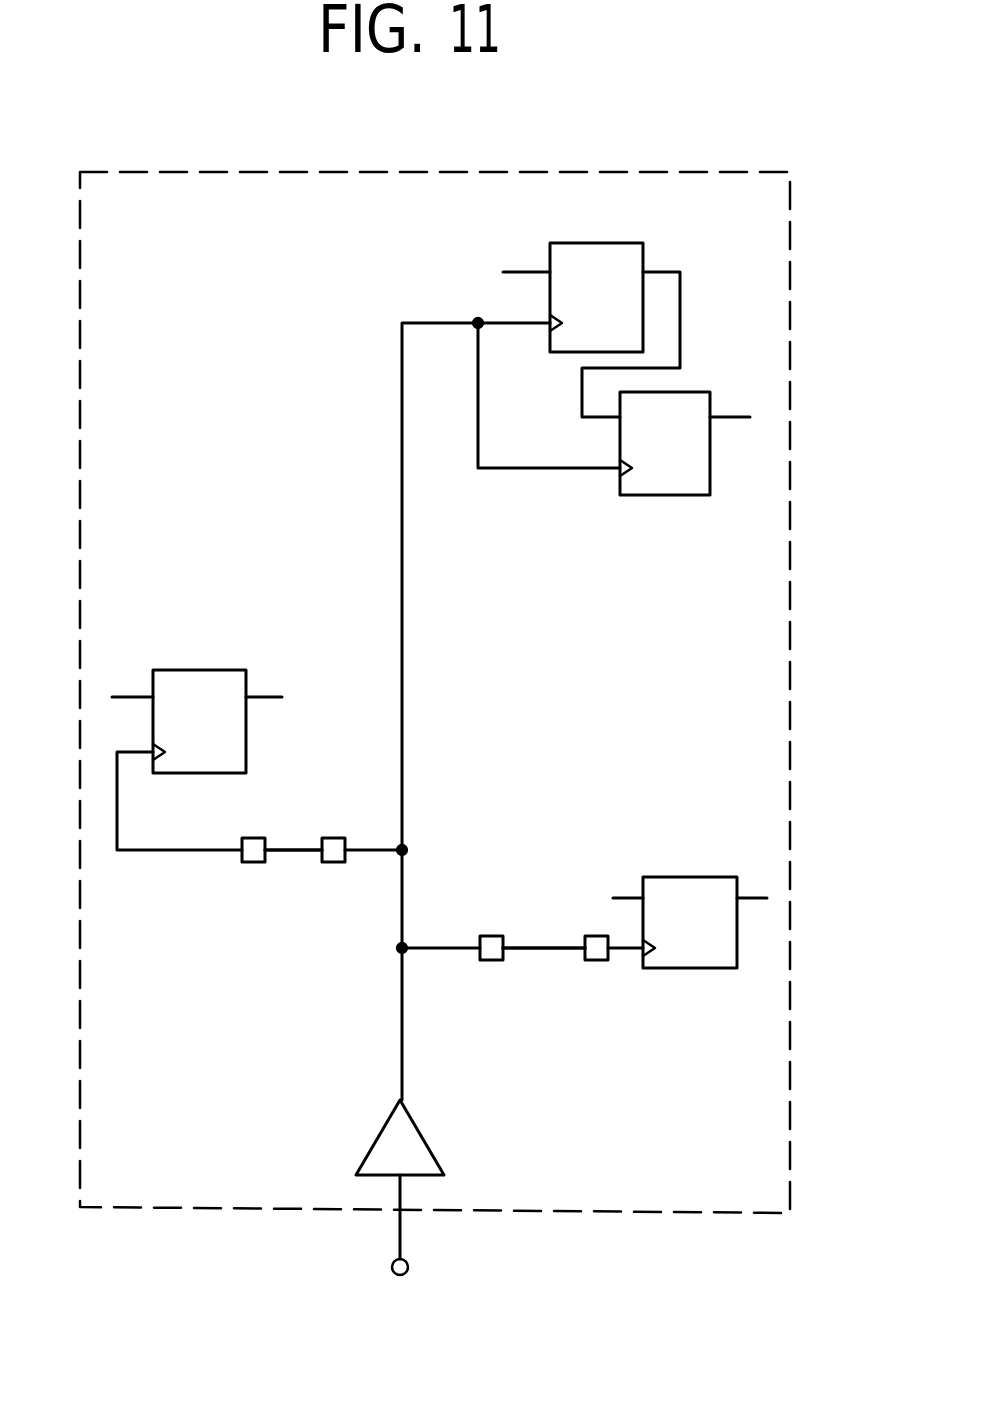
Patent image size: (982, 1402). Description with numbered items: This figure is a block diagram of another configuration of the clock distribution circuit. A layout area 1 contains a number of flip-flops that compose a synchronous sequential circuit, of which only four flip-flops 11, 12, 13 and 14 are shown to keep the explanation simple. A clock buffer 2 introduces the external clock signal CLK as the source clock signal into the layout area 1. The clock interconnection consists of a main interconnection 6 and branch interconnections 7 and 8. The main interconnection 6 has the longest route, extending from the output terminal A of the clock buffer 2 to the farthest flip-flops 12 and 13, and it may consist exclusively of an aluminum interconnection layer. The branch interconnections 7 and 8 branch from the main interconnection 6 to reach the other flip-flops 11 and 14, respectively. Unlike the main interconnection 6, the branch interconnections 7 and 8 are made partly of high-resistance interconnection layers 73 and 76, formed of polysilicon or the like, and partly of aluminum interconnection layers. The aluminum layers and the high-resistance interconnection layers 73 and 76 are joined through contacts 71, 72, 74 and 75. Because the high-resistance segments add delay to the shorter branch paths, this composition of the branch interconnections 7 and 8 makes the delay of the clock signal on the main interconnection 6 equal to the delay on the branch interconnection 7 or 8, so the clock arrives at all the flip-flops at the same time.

The layout area 1 is at (708, 1213).
The clock buffer 2 is at (430, 1145).
The main interconnection 6 is at (404, 642).
The branch interconnection 7 is at (170, 850).
The branch interconnection 8 is at (445, 945).
The flip-flop 11 is at (210, 670).
The flip-flop 12 is at (643, 255).
The flip-flop 13 is at (680, 497).
The flip-flop 14 is at (688, 877).
The contact 71 is at (333, 862).
The contact 72 is at (253, 862).
The high-resistance interconnection layer 73 is at (300, 846).
The contact 74 is at (488, 960).
The contact 75 is at (595, 960).
The high-resistance interconnection layer 76 is at (552, 944).
The output terminal A is at (402, 1100).
The external clock signal CLK is at (410, 1268).